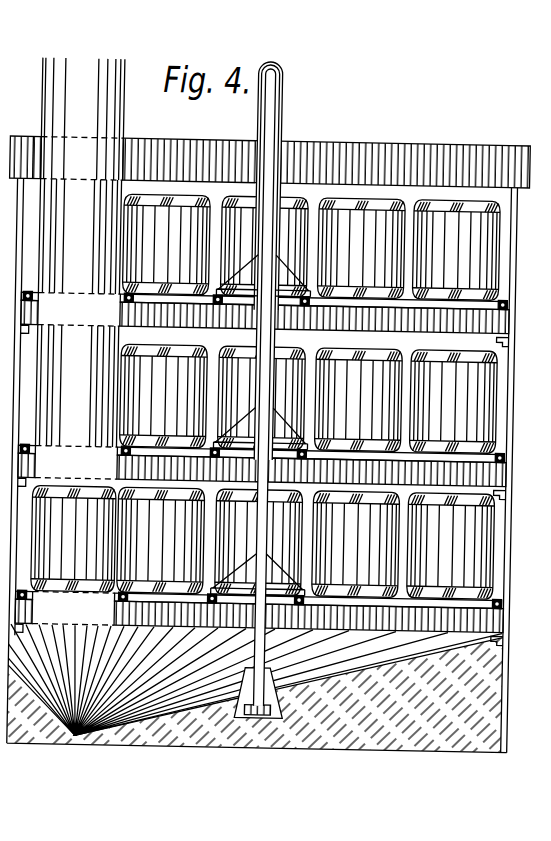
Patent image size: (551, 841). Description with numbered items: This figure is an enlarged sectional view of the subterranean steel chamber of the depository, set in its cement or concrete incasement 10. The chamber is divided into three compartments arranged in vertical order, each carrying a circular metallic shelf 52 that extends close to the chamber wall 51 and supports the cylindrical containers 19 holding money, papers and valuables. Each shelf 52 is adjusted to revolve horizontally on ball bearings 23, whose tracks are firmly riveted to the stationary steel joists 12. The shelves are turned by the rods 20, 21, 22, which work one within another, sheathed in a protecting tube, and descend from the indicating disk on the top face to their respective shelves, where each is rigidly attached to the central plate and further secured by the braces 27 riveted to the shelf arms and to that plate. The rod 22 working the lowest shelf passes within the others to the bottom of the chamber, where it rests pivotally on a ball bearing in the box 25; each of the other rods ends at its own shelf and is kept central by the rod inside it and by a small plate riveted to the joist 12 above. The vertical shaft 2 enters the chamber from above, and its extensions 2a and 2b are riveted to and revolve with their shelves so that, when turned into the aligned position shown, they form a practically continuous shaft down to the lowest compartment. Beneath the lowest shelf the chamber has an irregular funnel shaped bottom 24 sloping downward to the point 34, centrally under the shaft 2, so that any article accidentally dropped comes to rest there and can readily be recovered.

The vertical shaft 2 is at (83, 119).
The shaft extension 2a is at (79, 237).
The shaft extension 2b is at (76, 386).
The container 19 is at (266, 396).
The rod 20 is at (270, 82).
The rod 21 is at (273, 101).
The rod 22 is at (276, 124).
The side wall 51 is at (514, 204).
The circular metallic shelf 52 is at (505, 296).
The ball bearings 23 is at (507, 301).
The steel joist 12 is at (508, 318).
The brace 27 is at (292, 281).
The funnel shaped bottom 24 is at (254, 683).
The box 25 is at (290, 697).
The cement or concrete incasement 10 is at (255, 688).
The low point of bottom 34 is at (83, 751).